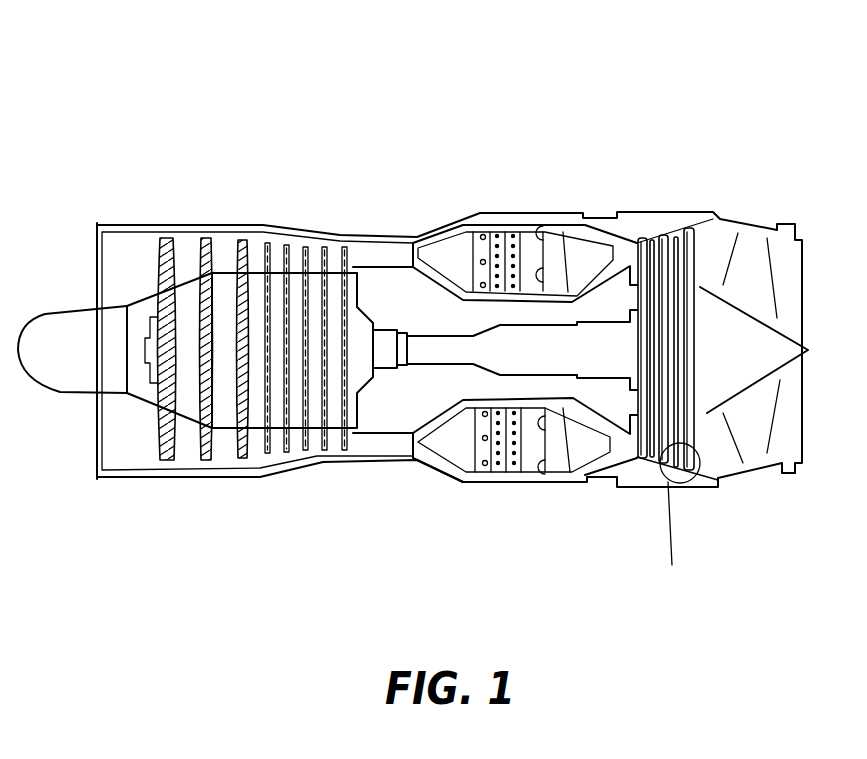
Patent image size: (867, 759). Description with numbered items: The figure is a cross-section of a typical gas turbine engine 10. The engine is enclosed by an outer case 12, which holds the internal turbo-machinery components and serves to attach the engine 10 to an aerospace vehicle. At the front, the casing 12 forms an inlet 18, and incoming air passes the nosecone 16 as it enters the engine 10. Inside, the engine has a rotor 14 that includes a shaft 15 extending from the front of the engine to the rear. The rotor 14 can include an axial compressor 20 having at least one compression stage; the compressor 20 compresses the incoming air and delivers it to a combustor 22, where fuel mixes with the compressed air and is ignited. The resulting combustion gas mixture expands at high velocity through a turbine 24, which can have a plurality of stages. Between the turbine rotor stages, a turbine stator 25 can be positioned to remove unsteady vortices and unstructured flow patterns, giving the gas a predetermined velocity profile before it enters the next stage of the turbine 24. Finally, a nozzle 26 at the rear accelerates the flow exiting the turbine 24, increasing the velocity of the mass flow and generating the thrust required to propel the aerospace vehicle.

The gas turbine engine 10 is at (600, 76).
The outer case 12 is at (223, 225).
The rotor 14 is at (58, 372).
The shaft 15 is at (430, 357).
The nosecone 16 is at (55, 328).
The inlet 18 is at (113, 437).
The axial compressor 20 is at (204, 452).
The combustor 22 is at (455, 245).
The turbine 24 is at (638, 238).
The turbine stator 25 is at (652, 240).
The nozzle 26 is at (758, 452).